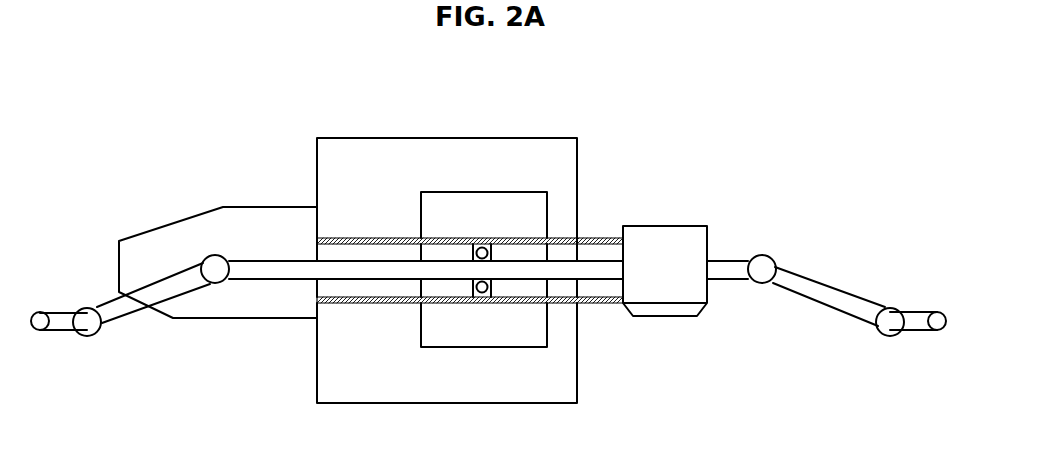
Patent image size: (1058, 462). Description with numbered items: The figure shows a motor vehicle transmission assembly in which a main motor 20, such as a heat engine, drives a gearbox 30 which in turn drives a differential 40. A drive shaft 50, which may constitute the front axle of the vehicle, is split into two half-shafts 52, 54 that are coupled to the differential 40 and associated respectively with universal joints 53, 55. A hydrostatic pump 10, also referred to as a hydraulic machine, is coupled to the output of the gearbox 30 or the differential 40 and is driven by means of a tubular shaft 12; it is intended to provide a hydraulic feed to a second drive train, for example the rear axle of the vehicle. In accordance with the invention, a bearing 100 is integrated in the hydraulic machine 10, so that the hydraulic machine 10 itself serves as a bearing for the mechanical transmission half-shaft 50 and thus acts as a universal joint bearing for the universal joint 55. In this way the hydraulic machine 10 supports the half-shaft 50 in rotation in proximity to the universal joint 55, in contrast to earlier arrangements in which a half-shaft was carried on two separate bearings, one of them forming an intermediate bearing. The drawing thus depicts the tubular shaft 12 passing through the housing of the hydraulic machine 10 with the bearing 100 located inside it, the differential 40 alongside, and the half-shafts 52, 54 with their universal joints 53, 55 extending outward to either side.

The hydrostatic pump 10 is at (471, 227).
The tubular shaft 12 is at (388, 242).
The main motor 20 is at (471, 175).
The gearbox 30 is at (256, 247).
The differential 40 is at (653, 275).
The drive shaft 50 is at (368, 270).
The half-shaft 52 is at (125, 305).
The universal joint 53 is at (213, 285).
The half-shaft 54 is at (562, 270).
The universal joint 55 is at (761, 256).
The bearing 100 is at (482, 300).